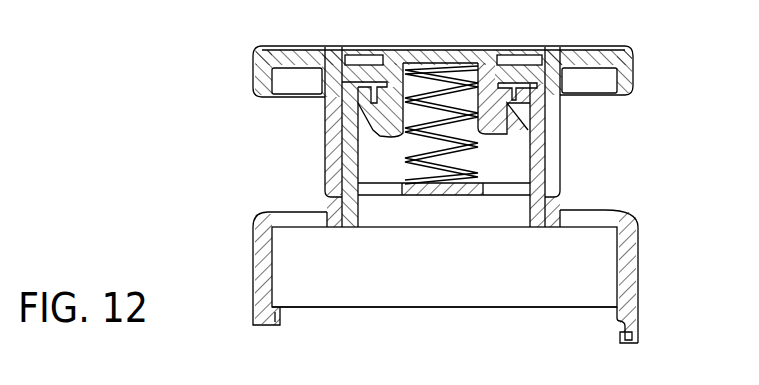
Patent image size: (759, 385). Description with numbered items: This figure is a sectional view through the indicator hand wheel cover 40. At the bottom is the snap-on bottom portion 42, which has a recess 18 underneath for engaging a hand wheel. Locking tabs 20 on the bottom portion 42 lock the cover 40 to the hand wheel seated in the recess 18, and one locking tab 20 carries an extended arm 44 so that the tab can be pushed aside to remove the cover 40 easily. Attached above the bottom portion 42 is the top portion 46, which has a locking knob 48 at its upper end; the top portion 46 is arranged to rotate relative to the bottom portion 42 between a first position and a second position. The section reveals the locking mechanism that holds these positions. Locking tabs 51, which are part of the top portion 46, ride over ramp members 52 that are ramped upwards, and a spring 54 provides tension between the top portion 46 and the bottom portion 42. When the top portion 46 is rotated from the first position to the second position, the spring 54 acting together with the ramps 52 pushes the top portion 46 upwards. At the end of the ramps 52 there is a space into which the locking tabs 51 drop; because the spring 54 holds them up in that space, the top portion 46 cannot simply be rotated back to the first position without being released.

The indicator hand wheel cover 40 is at (540, 32).
The locking knob 48 is at (625, 62).
The top portion 46 is at (330, 148).
The ramp members 52 is at (340, 88).
The locking tabs 51 is at (516, 110).
The spring 54 is at (455, 142).
The snap-on bottom portion 42 is at (255, 266).
The recess 18 is at (512, 295).
The locking tabs 20 is at (280, 327).
The extended arm 44 is at (636, 333).